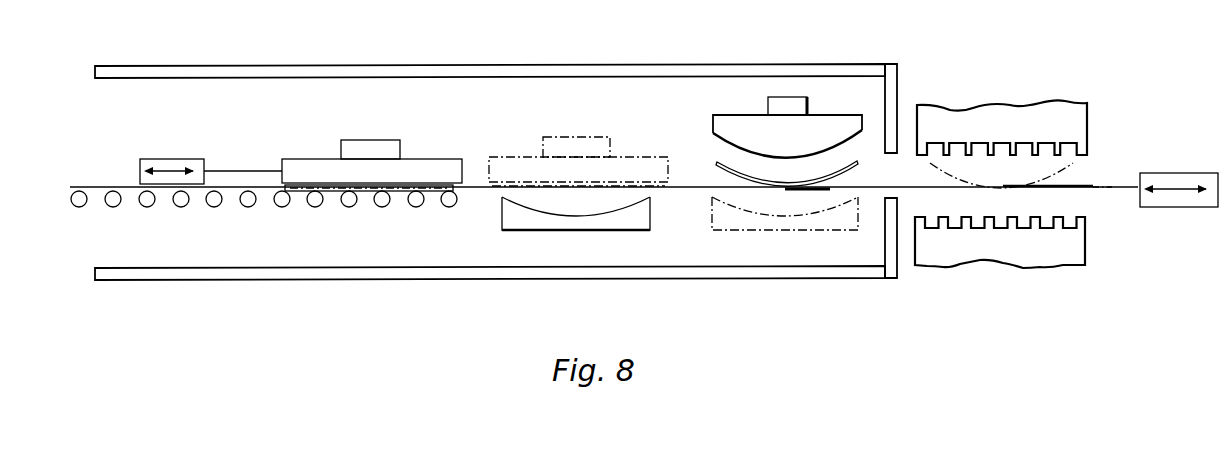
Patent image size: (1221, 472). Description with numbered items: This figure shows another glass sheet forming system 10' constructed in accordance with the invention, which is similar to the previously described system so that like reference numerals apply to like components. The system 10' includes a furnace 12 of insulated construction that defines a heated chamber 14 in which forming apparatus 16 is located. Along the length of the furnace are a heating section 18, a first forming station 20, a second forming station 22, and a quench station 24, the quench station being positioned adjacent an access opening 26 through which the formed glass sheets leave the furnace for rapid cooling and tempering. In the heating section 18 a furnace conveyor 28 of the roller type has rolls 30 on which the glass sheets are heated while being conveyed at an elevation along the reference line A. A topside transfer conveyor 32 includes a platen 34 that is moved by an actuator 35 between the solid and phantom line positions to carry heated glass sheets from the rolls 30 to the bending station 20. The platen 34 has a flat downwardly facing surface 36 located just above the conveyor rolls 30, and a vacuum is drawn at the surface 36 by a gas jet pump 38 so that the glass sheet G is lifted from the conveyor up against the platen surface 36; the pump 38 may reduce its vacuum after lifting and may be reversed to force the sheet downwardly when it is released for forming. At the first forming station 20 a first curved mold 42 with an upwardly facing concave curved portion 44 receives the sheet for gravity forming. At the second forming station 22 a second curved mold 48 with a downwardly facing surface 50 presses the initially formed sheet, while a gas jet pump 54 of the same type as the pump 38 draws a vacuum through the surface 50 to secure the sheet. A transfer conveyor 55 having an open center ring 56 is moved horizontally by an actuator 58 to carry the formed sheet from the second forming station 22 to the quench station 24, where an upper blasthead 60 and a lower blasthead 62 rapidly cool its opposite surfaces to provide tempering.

The glass sheet forming system 10' is at (531, 86).
The furnace 12 is at (733, 62).
The heated chamber 14 is at (797, 90).
The apparatus 16 is at (689, 89).
The heating section 18 is at (286, 251).
The first forming station 20 is at (586, 254).
The second forming station 22 is at (825, 248).
The quench station 24 is at (1003, 267).
The access opening 26 is at (902, 153).
The furnace conveyor 28 is at (99, 208).
The rolls 30 is at (110, 207).
The topside transfer conveyor 32 is at (468, 155).
The topside platen 34 is at (408, 159).
The actuator 35 is at (182, 158).
The downwardly facing surface 36 is at (412, 195).
The gas jet pump 38 is at (353, 143).
The first curved mold 42 is at (607, 231).
The curved portion 44 is at (557, 218).
The second curved mold 48 is at (707, 112).
The downwardly facing surface 50 is at (761, 167).
The gas jet pump 54 is at (808, 100).
The transfer conveyor 55 is at (1104, 182).
The ring 56 is at (936, 167).
The actuator 58 is at (1190, 208).
The upper blasthead 60 is at (1090, 110).
The lower blasthead 62 is at (1085, 250).
The reference line A is at (120, 187).
The glass sheet G is at (308, 180).